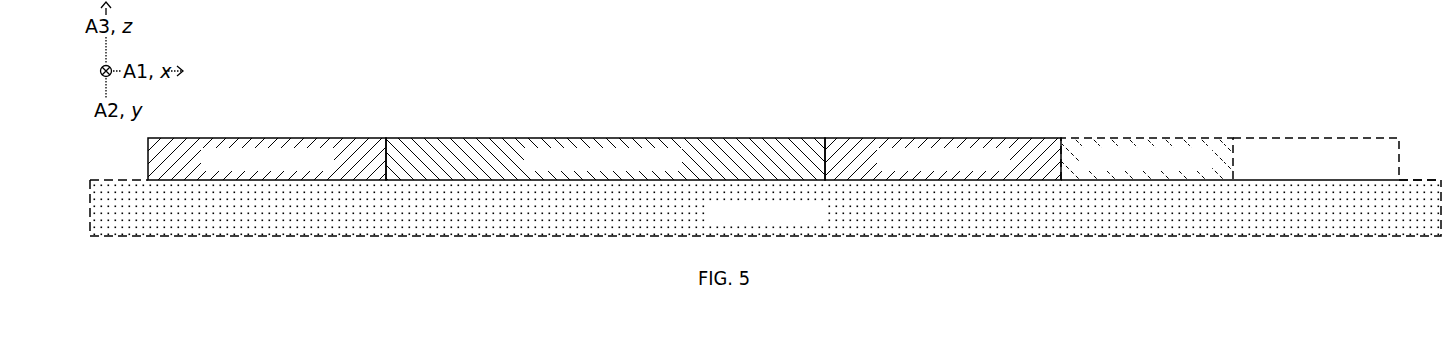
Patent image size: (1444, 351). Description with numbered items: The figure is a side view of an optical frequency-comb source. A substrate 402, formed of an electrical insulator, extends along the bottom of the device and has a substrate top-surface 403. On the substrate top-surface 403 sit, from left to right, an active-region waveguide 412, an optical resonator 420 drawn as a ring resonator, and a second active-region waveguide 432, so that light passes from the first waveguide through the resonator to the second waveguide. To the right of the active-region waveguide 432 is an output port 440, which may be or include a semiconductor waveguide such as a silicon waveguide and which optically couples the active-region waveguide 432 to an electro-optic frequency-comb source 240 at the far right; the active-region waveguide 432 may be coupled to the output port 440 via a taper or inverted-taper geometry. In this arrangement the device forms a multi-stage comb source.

The substrate 402 is at (823, 220).
The active-region waveguide 412 is at (330, 169).
The optical resonator 420 is at (605, 159).
The active-region waveguide 432 is at (1006, 169).
The output port 440 is at (1208, 169).
The electro-optic frequency-comb source 240 is at (1331, 169).
The substrate top-surface 403 is at (1427, 176).